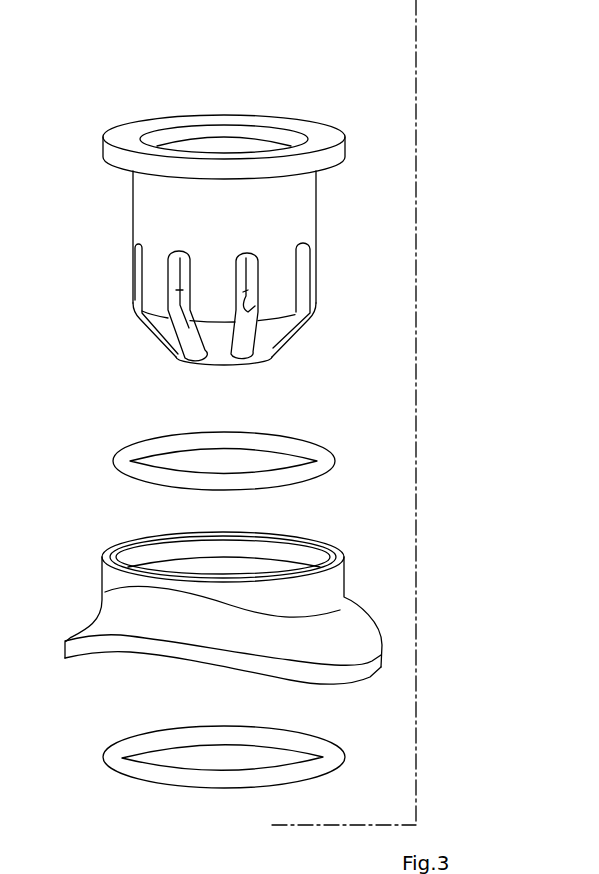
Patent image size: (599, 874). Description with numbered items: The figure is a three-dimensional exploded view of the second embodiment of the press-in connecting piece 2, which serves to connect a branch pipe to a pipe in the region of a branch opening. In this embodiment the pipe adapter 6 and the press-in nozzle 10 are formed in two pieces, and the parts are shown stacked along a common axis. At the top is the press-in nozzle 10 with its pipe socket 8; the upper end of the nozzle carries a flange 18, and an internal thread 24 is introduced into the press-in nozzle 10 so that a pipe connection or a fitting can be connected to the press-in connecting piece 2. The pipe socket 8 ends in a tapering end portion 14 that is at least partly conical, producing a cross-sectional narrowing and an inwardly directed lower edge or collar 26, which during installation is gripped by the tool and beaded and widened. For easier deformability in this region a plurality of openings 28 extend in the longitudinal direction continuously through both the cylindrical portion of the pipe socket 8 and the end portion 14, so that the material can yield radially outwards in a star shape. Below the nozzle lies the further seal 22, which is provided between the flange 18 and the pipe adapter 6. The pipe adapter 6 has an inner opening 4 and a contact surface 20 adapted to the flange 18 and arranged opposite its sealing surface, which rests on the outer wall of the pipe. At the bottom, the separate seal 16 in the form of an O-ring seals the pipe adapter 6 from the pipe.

The press-in connecting piece 2 is at (417, 100).
The inner opening 4 is at (185, 148).
The pipe adapter 6 is at (238, 596).
The pipe socket 8 is at (298, 227).
The press-in nozzle 10 is at (325, 198).
The tapering end portion 14 is at (305, 340).
The seal 16 is at (317, 743).
The flange 18 is at (328, 138).
The contact surface 20 is at (342, 553).
The further seal 22 is at (313, 450).
The internal thread 24 is at (264, 149).
The lower edge or collar 26 is at (217, 355).
The openings 28 is at (182, 302).